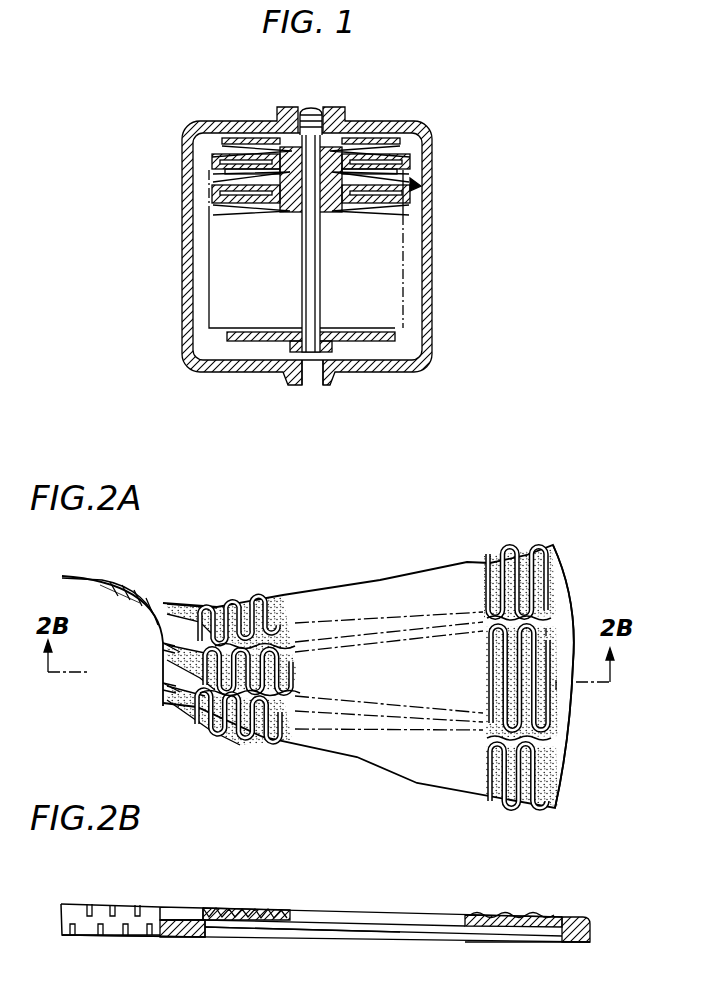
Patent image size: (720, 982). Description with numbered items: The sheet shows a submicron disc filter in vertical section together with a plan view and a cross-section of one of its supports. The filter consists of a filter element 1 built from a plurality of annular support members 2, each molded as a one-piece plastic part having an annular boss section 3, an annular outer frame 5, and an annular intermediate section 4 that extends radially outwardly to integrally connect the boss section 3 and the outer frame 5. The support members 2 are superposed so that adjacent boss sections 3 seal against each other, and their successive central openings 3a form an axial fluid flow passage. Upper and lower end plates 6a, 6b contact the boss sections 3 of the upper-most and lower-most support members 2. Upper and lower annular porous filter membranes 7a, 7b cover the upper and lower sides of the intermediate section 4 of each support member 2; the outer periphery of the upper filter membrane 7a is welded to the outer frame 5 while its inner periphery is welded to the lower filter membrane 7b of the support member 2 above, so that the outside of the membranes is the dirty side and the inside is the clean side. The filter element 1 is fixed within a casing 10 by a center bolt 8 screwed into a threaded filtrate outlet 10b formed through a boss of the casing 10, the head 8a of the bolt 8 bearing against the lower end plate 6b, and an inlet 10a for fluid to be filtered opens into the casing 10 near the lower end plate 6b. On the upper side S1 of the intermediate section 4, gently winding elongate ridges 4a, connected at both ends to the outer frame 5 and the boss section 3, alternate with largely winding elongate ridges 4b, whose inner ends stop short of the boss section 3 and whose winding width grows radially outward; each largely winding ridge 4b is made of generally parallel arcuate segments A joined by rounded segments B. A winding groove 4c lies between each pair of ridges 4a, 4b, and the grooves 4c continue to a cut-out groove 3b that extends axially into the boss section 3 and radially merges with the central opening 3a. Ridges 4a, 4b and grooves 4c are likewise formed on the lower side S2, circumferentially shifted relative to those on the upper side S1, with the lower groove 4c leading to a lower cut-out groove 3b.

In FIG. 1, the filter element 1 is at (408, 310).
In FIG. 1, the annular support member 2 is at (418, 185).
In FIG. 2A, the annular support member 2 is at (386, 580).
In FIG. 2B, the annular support member 2 is at (414, 942).
In FIG. 1, the boss section 3 is at (345, 215).
In FIG. 2A, the boss section 3 is at (178, 686).
In FIG. 2B, the boss section 3 is at (131, 905).
In FIG. 2A, the central opening 3a is at (136, 628).
In FIG. 2B, the central opening 3a is at (113, 934).
In FIG. 2A, the cut-out groove 3b is at (178, 652).
In FIG. 2B, the cut-out groove 3b is at (89, 904).
In FIG. 1, the intermediate section 4 is at (380, 215).
In FIG. 2A, the intermediate section 4 is at (330, 746).
In FIG. 2A, the gently winding elongate ridge 4a is at (275, 604).
In FIG. 2B, the gently winding elongate ridge 4a is at (268, 937).
In FIG. 2A, the largely winding elongate ridge 4b is at (266, 645).
In FIG. 2B, the largely winding elongate ridge 4b is at (256, 912).
In FIG. 2A, the winding groove 4c is at (233, 609).
In FIG. 2B, the winding groove 4c is at (283, 920).
In FIG. 1, the annular outer frame 5 is at (398, 208).
In FIG. 2A, the annular outer frame 5 is at (546, 800).
In FIG. 2B, the annular outer frame 5 is at (576, 917).
In FIG. 1, the upper end plate 6a is at (365, 139).
In FIG. 1, the lower end plate 6b is at (363, 343).
In FIG. 1, the upper annular porous filter membrane 7a is at (280, 178).
In FIG. 1, the lower annular porous filter membrane 7b is at (282, 212).
In FIG. 1, the center bolt 8 is at (302, 273).
In FIG. 1, the head of the bolt 8a is at (313, 353).
In FIG. 1, the casing 10 is at (268, 373).
In FIG. 1, the inlet 10a is at (313, 386).
In FIG. 1, the threaded filtrate outlet 10b is at (313, 107).
In FIG. 2A, the arcuate segment A is at (556, 684).
In FIG. 2A, the rounded segment B is at (546, 632).
In FIG. 2B, the upper side S1 is at (504, 913).
In FIG. 2B, the lower side S2 is at (526, 944).